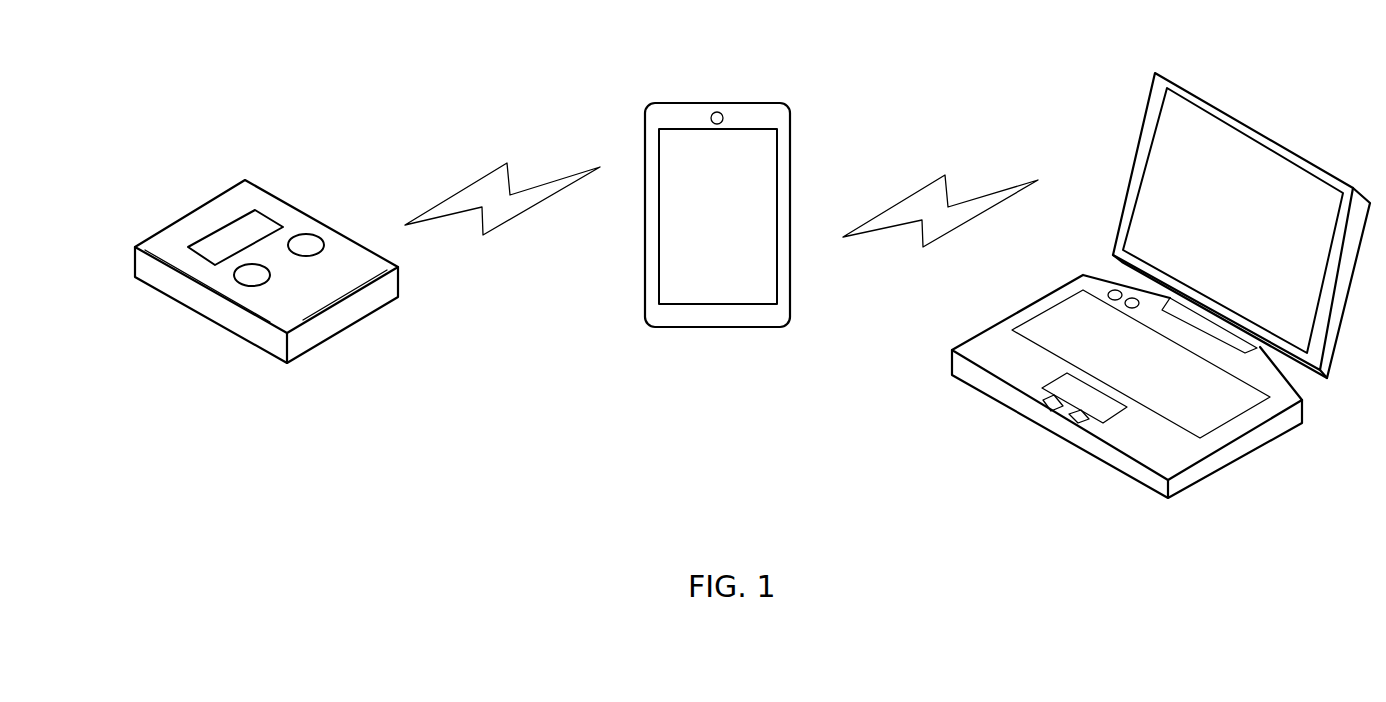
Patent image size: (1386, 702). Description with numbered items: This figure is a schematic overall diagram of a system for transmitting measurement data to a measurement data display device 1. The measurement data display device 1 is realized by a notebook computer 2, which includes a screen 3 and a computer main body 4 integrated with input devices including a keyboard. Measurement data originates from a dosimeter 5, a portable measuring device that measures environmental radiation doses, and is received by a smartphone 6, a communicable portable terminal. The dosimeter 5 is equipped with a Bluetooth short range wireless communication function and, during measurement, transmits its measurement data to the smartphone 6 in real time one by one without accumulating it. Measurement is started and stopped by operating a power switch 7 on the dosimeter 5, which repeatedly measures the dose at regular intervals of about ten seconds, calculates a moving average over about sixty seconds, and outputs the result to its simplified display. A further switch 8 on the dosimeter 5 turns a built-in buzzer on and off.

The measurement data display device 1 is at (1098, 102).
The notebook computer 2 is at (1243, 470).
The screen 3 is at (1110, 145).
The computer main body 4 is at (1027, 420).
The dosimeter 5 is at (190, 210).
The smartphone 6 is at (713, 102).
The power switch 7 is at (305, 233).
The switch for turning on/off a built-in buzzer 8 is at (250, 282).